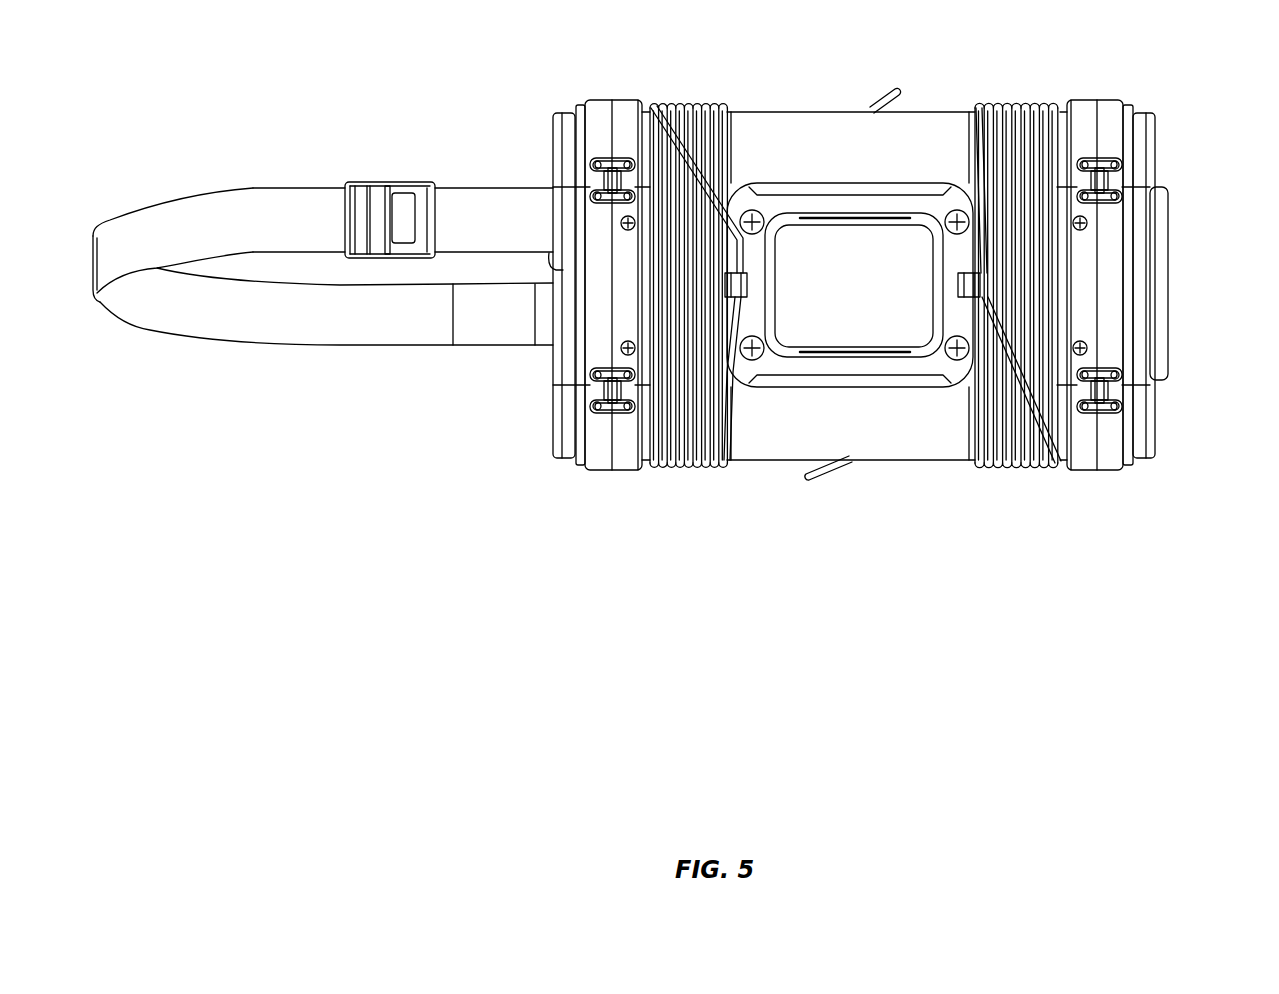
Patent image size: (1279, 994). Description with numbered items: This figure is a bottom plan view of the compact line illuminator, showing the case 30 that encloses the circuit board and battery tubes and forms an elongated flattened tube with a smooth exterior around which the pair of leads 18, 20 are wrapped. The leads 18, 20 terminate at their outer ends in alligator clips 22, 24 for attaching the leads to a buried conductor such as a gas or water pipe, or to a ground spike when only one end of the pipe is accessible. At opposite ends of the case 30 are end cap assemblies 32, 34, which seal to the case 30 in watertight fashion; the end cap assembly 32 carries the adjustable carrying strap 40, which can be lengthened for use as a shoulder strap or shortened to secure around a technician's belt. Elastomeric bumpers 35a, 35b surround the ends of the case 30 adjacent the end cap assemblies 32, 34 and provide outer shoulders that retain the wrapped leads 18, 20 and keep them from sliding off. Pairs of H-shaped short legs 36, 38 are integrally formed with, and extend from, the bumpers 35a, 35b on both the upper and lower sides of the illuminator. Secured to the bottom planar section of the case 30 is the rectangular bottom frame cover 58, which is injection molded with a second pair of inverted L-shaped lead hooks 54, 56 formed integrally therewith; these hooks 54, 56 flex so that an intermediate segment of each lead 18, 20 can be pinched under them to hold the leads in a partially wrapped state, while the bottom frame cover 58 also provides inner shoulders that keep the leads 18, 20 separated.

The lead 18 is at (692, 108).
The lead 20 is at (1020, 107).
The alligator clip 22 is at (813, 473).
The alligator clip 24 is at (895, 90).
The case 30 is at (886, 465).
The end cap assembly 32 is at (552, 133).
The end cap assembly 34 is at (1158, 172).
The elastomeric bumper 35a is at (623, 100).
The elastomeric bumper 35b is at (1108, 97).
The H-shaped short legs 36 is at (606, 160).
The H-shaped short legs 38 is at (1117, 158).
The adjustable carrying strap 40 is at (170, 197).
The lead hook 54 is at (740, 288).
The lead hook 56 is at (963, 285).
The bottom frame cover 58 is at (903, 203).